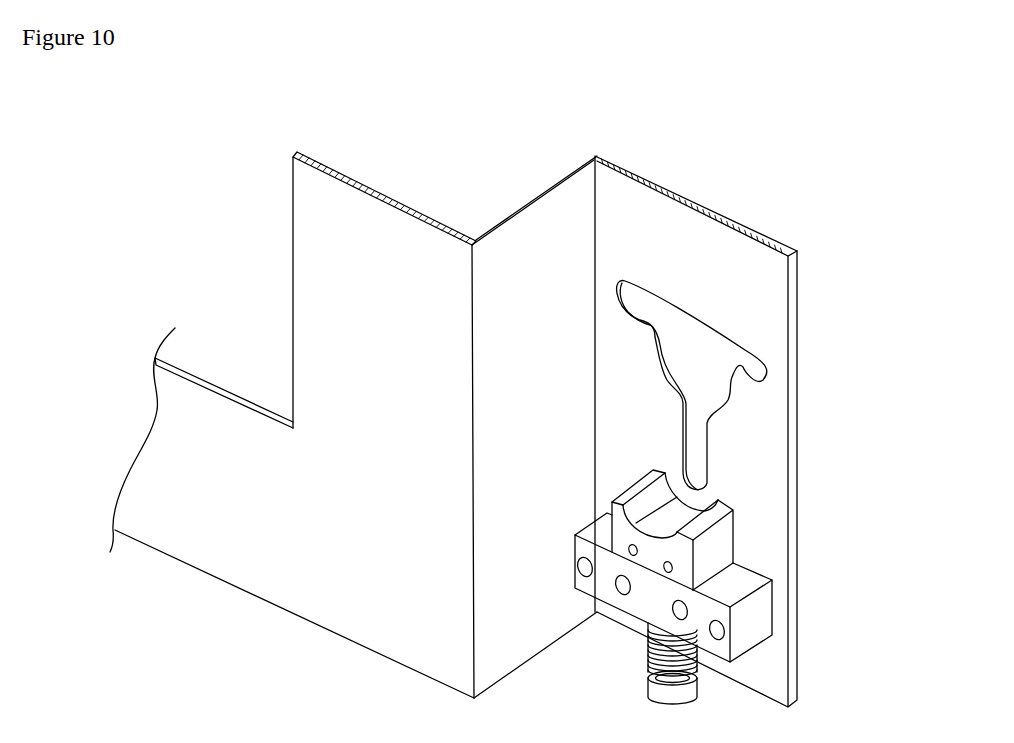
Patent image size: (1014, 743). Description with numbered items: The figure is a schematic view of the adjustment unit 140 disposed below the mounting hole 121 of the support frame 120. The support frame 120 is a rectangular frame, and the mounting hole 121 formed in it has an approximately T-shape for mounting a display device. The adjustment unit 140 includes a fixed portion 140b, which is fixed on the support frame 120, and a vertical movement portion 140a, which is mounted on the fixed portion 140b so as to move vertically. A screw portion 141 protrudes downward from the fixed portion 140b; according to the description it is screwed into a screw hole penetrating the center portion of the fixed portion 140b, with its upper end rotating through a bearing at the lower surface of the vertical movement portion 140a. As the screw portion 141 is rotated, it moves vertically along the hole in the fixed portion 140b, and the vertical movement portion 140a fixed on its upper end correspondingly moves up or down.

The support frame 120 is at (547, 190).
The mounting hole 121 is at (678, 373).
The adjustment unit 140 is at (747, 566).
The vertical movement portion 140a is at (733, 543).
The fixed portion 140b is at (760, 595).
The bolt 141 is at (647, 666).